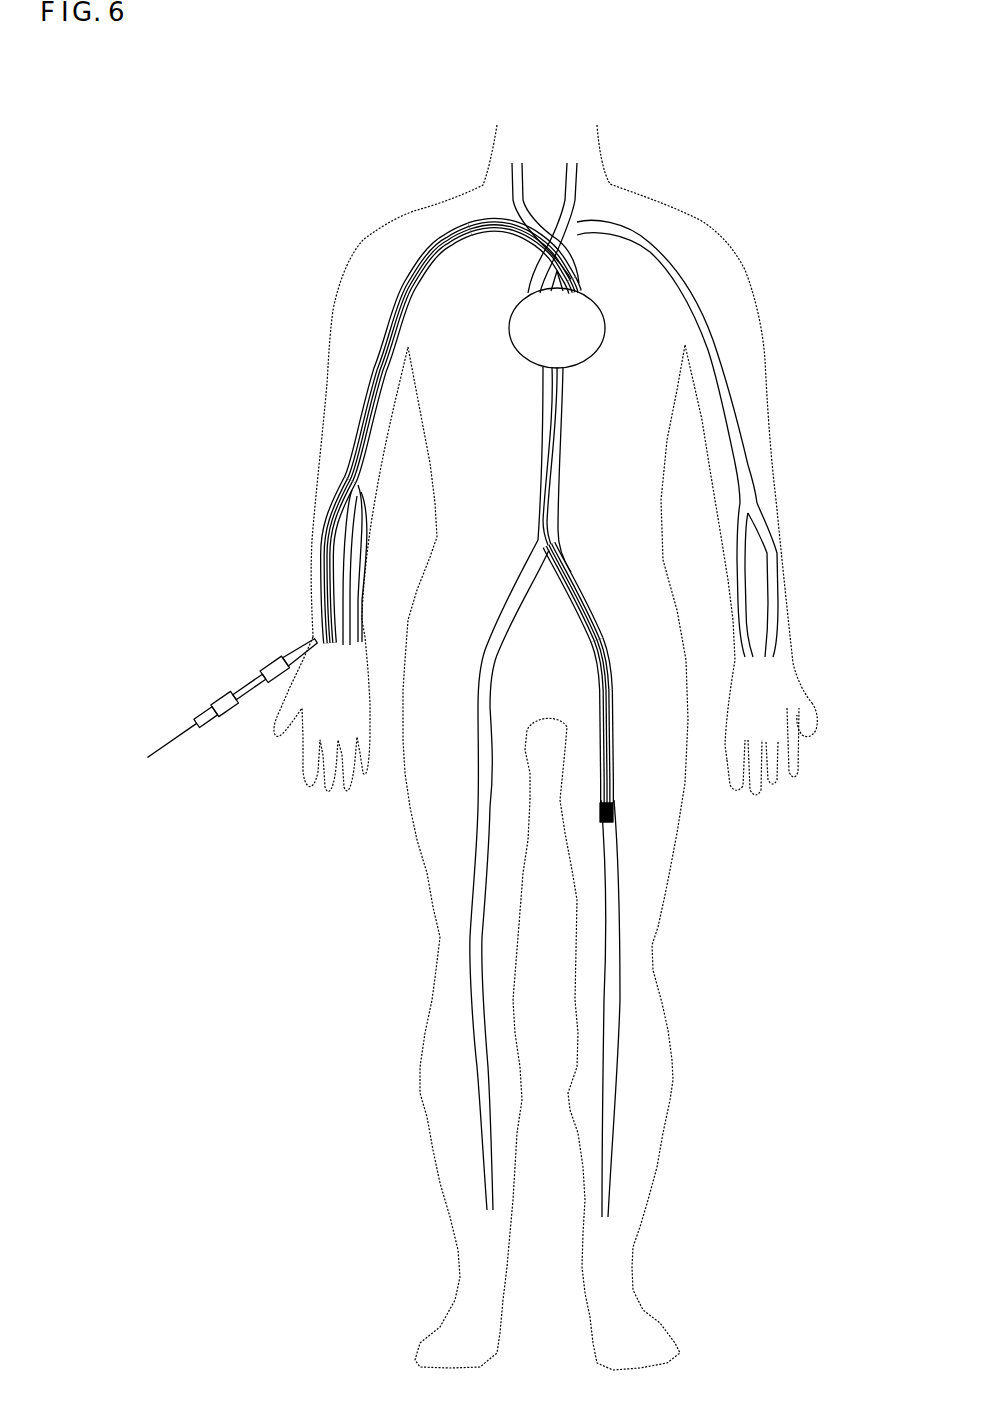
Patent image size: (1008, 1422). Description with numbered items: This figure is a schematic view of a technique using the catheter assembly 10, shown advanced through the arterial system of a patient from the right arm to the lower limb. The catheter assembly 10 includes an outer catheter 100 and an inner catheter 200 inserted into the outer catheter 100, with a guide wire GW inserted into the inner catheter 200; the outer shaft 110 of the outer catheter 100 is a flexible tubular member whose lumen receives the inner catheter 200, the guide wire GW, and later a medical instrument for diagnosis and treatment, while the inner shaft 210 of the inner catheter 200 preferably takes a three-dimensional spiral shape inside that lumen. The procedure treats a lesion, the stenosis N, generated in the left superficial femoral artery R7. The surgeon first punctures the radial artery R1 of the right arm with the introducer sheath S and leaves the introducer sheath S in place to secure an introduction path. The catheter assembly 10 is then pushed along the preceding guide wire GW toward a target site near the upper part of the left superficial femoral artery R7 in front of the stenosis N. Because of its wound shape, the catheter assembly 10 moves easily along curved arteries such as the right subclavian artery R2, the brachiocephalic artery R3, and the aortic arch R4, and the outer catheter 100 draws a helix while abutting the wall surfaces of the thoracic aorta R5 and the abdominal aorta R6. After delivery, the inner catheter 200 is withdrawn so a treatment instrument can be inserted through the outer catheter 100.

The catheter assembly 10 is at (190, 630).
The outer catheter 100 is at (242, 700).
The outer shaft 110 is at (613, 647).
The inner catheter 200 is at (198, 718).
The inner shaft 210 is at (613, 737).
The guide wire GW is at (613, 787).
The stenosis N is at (613, 822).
The introducer sheath S is at (305, 648).
The radial artery R1 is at (323, 597).
The right subclavian artery R2 is at (413, 258).
The brachiocephalic artery R3 is at (468, 222).
The aortic arch R4 is at (546, 265).
The thoracic aorta R5 is at (567, 377).
The abdominal aorta R6 is at (563, 477).
The left superficial femoral artery R7 is at (610, 838).